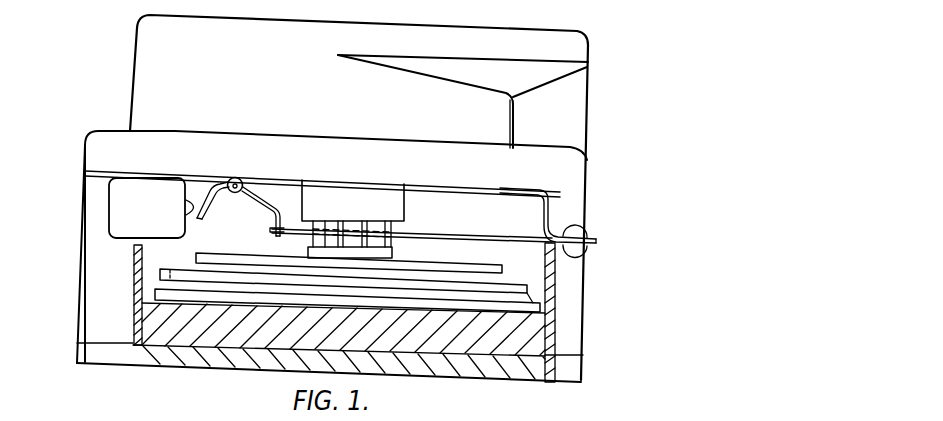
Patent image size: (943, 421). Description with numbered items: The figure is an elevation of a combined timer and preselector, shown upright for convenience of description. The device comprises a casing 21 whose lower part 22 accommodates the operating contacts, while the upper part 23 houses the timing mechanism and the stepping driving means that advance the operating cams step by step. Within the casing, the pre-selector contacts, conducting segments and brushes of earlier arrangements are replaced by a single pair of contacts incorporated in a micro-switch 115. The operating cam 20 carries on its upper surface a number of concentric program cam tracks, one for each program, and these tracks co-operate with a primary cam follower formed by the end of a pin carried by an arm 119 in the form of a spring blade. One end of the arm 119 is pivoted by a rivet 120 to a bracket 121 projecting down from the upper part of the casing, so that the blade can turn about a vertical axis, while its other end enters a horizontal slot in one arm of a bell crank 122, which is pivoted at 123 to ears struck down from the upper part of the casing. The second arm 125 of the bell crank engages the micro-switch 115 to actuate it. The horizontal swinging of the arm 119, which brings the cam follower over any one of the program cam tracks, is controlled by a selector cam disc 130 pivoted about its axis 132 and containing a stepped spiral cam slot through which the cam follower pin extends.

The upper part 23 is at (575, 108).
The casing 21 is at (596, 162).
The micro-switch 115 is at (133, 202).
The second arm 125 is at (202, 195).
The pivot 123 is at (238, 177).
The bell crank 122 is at (268, 200).
The axis 132 is at (374, 226).
The arm 119 is at (486, 236).
The bracket 121 is at (552, 214).
The rivet 120 is at (575, 230).
The selector cam disc 130 is at (497, 270).
The operating cam 20 is at (525, 289).
The lower part 22 is at (535, 337).